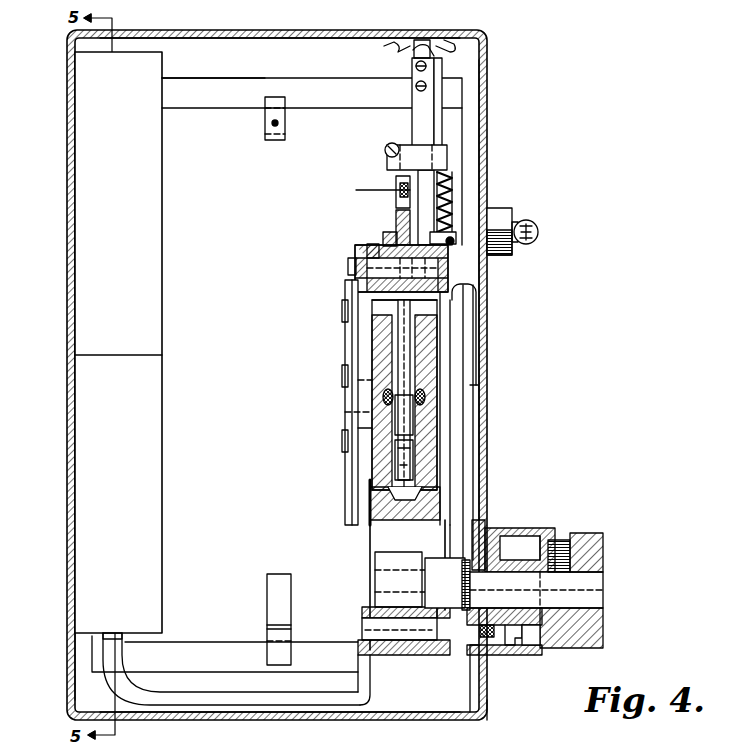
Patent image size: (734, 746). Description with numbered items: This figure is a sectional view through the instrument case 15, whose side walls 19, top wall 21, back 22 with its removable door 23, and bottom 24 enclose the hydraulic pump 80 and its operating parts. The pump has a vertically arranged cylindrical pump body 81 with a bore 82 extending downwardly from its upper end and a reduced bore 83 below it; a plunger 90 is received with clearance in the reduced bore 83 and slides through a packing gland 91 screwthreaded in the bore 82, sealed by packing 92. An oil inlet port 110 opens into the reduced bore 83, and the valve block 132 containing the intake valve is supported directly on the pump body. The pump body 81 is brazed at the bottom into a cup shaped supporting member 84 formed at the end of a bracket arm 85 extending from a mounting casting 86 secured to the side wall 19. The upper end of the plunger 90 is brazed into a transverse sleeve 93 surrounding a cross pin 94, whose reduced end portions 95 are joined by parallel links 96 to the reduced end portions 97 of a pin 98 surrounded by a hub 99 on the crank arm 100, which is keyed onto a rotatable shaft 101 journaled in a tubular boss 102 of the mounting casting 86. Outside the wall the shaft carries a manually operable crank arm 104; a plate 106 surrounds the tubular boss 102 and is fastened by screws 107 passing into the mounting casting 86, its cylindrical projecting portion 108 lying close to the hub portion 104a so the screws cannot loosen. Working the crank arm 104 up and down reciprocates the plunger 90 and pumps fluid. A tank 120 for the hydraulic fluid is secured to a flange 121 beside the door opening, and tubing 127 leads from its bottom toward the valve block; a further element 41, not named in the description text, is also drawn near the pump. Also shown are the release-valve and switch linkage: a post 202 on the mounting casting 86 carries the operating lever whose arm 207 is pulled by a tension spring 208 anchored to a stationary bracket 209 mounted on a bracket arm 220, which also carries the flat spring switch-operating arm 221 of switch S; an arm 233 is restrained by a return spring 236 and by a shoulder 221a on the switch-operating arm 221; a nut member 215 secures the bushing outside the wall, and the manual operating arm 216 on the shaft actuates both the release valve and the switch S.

The instrument case 15 is at (490, 82).
The side wall 19 is at (68, 226).
The top wall 21 is at (282, 38).
The back 22 is at (310, 58).
The door 23 is at (271, 381).
The bottom 24 is at (480, 720).
The tank 120 is at (162, 380).
The flange 121 is at (256, 78).
The tubing 127 is at (278, 685).
The bracket arm 220 is at (435, 130).
The stationary bracket 209 is at (440, 155).
The tension spring 208 is at (388, 136).
The operating arm 207 is at (400, 178).
The switch S is at (400, 190).
The switch-operating arm 221 is at (371, 190).
The shoulder 221a is at (400, 215).
The return spring 236 is at (452, 188).
The arm 233 is at (455, 236).
The nut member 215 is at (508, 212).
The manual operating arm 216 is at (538, 232).
The reduced end portions of pin 95 is at (350, 266).
The cross pin 94 is at (372, 246).
The transverse sleeve 93 is at (390, 233).
The parallel links 96 is at (344, 322).
The packing gland 91 is at (437, 340).
The bore 82 is at (412, 375).
The reduced bore 83 is at (414, 452).
The hydraulic pump 80 is at (437, 412).
The pump body 81 is at (414, 430).
The packing 92 is at (384, 394).
The valve block 132 is at (340, 378).
The oil inlet port 110 is at (340, 411).
The plunger 90 is at (358, 428).
The cup shaped supporting member 84 is at (368, 510).
The bracket arm 85 is at (462, 500).
The mounting casting 86 is at (463, 468).
The pipe 41 is at (470, 345).
The post 202 is at (478, 385).
The crank arm 100 is at (374, 585).
The reduced end portions of pin 97 is at (364, 626).
The pin 98 is at (415, 655).
The hub 99 is at (385, 655).
The tubular boss 102 is at (520, 555).
The plate 106 is at (496, 545).
The rotatable shaft 101 is at (514, 584).
The manually operable crank arm 104 is at (603, 548).
The hub portion 104a is at (603, 628).
The screws 107 is at (512, 648).
The cylindrical projecting portion 108 is at (540, 650).